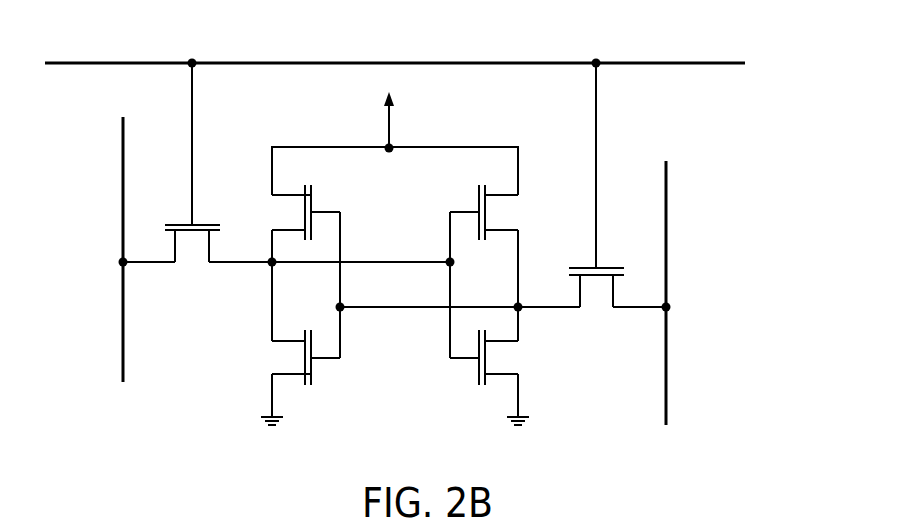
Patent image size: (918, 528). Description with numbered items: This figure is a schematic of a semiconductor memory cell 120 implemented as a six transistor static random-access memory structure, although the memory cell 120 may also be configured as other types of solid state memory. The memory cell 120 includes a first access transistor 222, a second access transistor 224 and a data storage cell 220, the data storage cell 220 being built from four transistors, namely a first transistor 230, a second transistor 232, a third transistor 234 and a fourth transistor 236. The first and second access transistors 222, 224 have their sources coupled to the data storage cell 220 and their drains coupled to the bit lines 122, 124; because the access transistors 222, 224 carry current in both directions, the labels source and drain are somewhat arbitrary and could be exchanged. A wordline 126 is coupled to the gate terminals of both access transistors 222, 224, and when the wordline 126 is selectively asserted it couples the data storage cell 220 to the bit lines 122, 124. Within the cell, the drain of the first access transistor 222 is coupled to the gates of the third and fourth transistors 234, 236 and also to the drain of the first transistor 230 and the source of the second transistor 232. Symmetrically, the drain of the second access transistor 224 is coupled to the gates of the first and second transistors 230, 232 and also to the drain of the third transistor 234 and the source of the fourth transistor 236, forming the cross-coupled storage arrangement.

The memory cell 120 is at (176, 400).
The bit line 122 is at (122, 185).
The bit line 124 is at (668, 182).
The wordline 126 is at (238, 63).
The data storage cell 220 is at (481, 118).
The first access transistor 222 is at (204, 214).
The second access transistor 224 is at (583, 259).
The first transistor 230 is at (316, 202).
The second transistor 232 is at (313, 367).
The third transistor 234 is at (478, 195).
The fourth transistor 236 is at (474, 370).